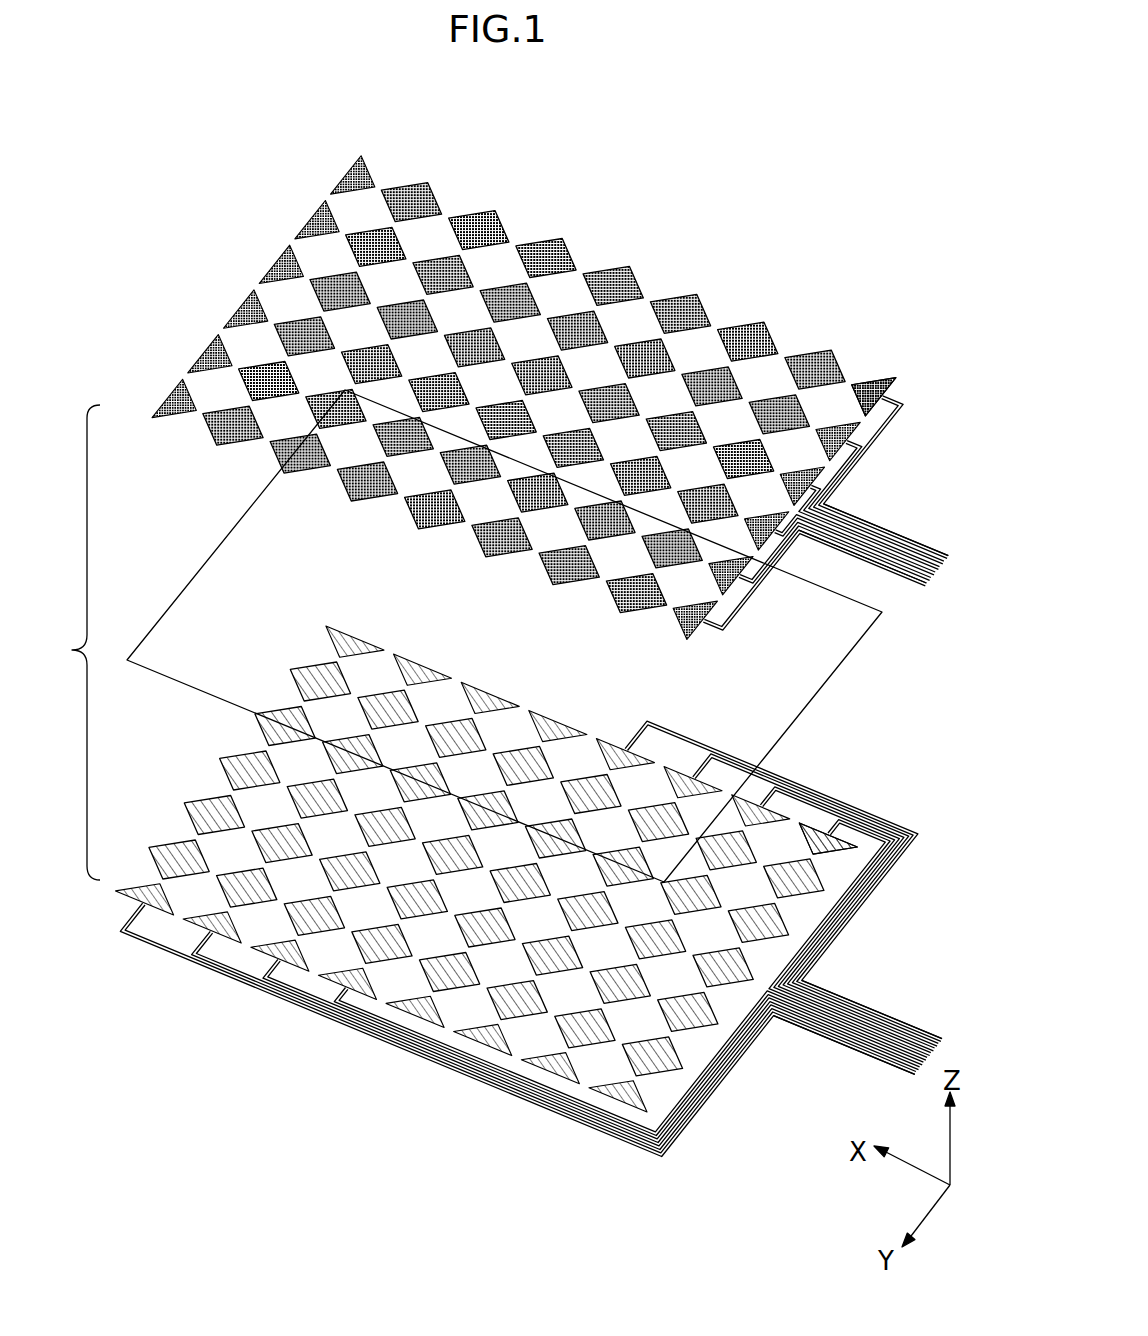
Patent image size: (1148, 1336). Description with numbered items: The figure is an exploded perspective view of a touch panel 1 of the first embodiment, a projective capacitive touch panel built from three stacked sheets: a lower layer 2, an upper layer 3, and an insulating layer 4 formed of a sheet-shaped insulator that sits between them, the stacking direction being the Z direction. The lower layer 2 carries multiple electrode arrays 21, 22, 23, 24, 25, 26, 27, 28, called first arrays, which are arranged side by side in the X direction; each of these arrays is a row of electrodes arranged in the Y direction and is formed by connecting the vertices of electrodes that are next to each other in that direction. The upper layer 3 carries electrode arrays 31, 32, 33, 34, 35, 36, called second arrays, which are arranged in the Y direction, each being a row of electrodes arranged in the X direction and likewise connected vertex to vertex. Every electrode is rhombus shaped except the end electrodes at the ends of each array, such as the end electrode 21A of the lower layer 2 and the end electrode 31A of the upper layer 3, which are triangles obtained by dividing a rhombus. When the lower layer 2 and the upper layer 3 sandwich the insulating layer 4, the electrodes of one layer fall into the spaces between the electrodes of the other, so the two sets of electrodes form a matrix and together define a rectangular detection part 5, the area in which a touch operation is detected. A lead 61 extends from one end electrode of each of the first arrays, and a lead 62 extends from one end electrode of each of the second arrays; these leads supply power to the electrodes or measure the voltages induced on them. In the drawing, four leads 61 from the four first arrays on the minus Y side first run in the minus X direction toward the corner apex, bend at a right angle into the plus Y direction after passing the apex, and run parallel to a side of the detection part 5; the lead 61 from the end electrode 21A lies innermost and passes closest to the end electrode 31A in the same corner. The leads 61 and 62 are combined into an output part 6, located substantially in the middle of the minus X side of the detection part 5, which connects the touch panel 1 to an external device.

The touch panel 1 is at (138, 210).
The lower layer 2 is at (112, 1032).
The upper layer 3 is at (790, 303).
The insulating layer 4 is at (843, 650).
The detection part 5 is at (76, 642).
The output part 6 is at (887, 524).
The electrode array 21 is at (615, 1120).
The electrode array 22 is at (545, 1090).
The electrode array 23 is at (475, 1058).
The electrode array 24 is at (405, 1028).
The electrode array 25 is at (335, 995).
The electrode array 26 is at (265, 966).
The electrode array 27 is at (195, 936).
The electrode array 28 is at (120, 906).
The end electrode 21A is at (838, 843).
The electrode array 31 is at (353, 178).
The electrode array 32 is at (322, 216).
The electrode array 33 is at (288, 260).
The electrode array 34 is at (253, 304).
The electrode array 35 is at (218, 348).
The electrode array 36 is at (182, 392).
The end electrode 31A is at (878, 388).
The lead 61 is at (877, 878).
The lead 62 is at (887, 431).